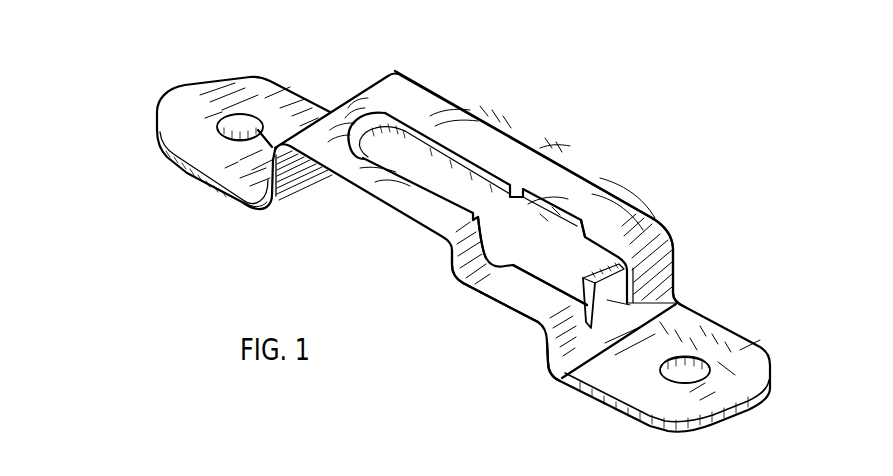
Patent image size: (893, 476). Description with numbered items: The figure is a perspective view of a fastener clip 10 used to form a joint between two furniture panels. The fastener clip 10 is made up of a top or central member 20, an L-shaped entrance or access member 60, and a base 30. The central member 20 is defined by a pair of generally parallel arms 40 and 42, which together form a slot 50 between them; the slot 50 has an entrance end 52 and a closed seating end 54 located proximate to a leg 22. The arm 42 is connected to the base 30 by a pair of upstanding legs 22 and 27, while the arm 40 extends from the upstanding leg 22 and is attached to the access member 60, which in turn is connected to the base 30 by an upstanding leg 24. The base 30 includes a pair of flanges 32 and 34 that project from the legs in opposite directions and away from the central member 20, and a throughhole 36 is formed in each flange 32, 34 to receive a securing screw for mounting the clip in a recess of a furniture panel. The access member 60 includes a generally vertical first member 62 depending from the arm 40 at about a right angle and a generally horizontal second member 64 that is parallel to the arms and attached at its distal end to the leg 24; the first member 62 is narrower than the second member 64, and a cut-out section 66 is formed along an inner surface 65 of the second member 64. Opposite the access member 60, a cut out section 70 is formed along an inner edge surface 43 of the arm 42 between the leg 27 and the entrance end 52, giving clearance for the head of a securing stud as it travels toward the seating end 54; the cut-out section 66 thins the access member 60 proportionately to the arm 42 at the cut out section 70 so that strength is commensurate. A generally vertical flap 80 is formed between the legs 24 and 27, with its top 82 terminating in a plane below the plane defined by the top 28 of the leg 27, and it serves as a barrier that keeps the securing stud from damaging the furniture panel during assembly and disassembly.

The fastener clip 10 is at (181, 279).
The central member 20 is at (450, 113).
The upstanding leg 22 is at (283, 205).
The upstanding leg 24 is at (566, 352).
The upstanding leg 27 is at (667, 273).
The top of leg 27 28 is at (676, 227).
The base 30 is at (148, 62).
The flange 32 is at (176, 131).
The flange 34 is at (764, 373).
The throughhole 36 is at (236, 125).
The arm 40 is at (346, 172).
The arm 42 is at (513, 150).
The inner edge surface 43 is at (642, 210).
The slot 50 is at (403, 167).
The entrance end 52 is at (553, 197).
The seating end 54 is at (380, 112).
The access member 60 is at (462, 252).
The first member 62 is at (447, 257).
The second member 64 is at (500, 291).
The inner surface 65 is at (533, 277).
The cut-out section 66 is at (488, 262).
The cut out section 70 is at (592, 192).
The flap 80 is at (682, 301).
The top of flap 82 is at (581, 280).